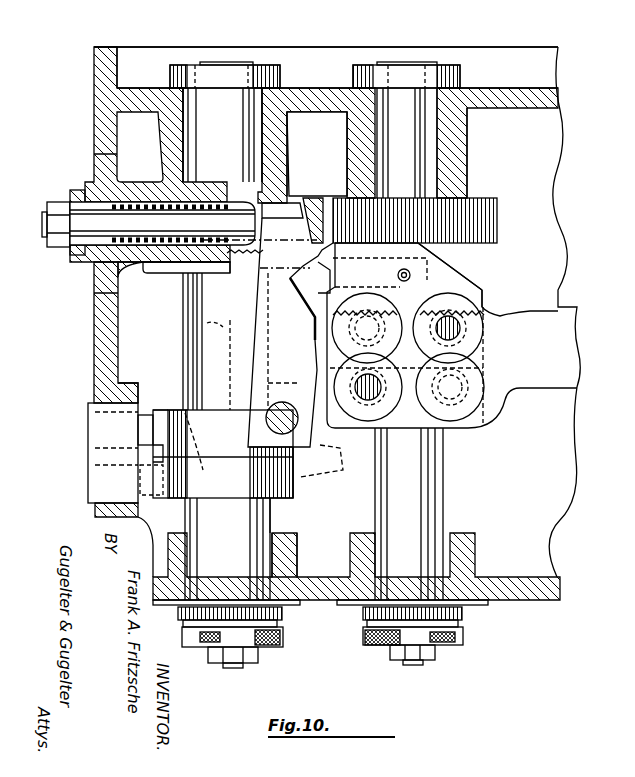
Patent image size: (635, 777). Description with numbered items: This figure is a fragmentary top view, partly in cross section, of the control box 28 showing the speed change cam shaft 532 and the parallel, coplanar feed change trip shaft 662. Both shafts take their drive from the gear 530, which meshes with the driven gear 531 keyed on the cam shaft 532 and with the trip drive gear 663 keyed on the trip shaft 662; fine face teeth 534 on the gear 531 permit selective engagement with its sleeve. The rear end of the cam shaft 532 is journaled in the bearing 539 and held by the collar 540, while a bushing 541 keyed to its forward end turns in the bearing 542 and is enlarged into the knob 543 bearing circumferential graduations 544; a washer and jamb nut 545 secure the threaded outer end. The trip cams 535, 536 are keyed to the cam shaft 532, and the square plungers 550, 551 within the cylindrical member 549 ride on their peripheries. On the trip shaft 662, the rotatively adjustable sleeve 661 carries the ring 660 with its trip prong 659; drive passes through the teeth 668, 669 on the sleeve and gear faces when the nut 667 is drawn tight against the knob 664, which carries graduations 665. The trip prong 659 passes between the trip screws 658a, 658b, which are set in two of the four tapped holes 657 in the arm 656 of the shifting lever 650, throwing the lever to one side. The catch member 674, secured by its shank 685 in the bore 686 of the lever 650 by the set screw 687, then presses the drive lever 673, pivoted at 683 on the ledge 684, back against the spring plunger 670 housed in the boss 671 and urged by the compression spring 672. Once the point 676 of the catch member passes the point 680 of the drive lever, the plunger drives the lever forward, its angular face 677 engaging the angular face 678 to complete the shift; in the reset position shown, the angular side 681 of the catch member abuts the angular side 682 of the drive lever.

The control box 28 is at (537, 601).
The speed change cam shaft 532 is at (224, 60).
The collar 540 is at (282, 63).
The bearing 539 is at (190, 173).
The spring plunger 670 is at (237, 190).
The point of the drive lever 680 is at (317, 154).
The gear 530 is at (313, 197).
The driven gear 531 is at (302, 197).
The feed change trip shaft 662 is at (412, 58).
The trip drive gear 663 is at (470, 197).
The compression spring 672 is at (137, 243).
The boss 671 is at (140, 267).
The fine teeth 534 is at (233, 257).
The angular face of the drive lever 677 is at (300, 220).
The angular side of the drive lever 682 is at (310, 255).
The angular side of the catch member 681 is at (293, 265).
The point of the catch member 676 is at (302, 300).
The angular face of the catch member 678 is at (317, 293).
The drive lever 673 is at (257, 337).
The shifting lever 650 is at (577, 385).
The trip screw 658a is at (360, 292).
The tapped holes 657 is at (448, 315).
The trip prong 659 is at (380, 392).
The trip screw 658b is at (467, 412).
The shank 685 is at (382, 288).
The catch member 674 is at (330, 260).
The set screw 687 is at (404, 269).
The bore 686 is at (425, 243).
The teeth 669 is at (483, 298).
The teeth 668 is at (485, 332).
The ring 660 is at (483, 358).
The sleeve 661 is at (447, 497).
The ledge 684 is at (223, 454).
The pivot 683 is at (265, 419).
The trip cam 536 is at (300, 487).
The bushing 541 is at (275, 523).
The bearing 542 is at (280, 560).
The trip cam 535 is at (177, 407).
The cylindrical member 549 is at (95, 385).
The square plunger 550 is at (97, 442).
The arm of the shifter lever 656 is at (152, 428).
The square plunger 551 is at (93, 477).
The circumferential graduations 544 is at (276, 616).
The knob 543 is at (192, 640).
The washer and jamb nut 545 is at (250, 662).
The circumferential graduations 665 is at (460, 613).
The knob 664 is at (462, 646).
The washer and jamb nut 667 is at (433, 660).